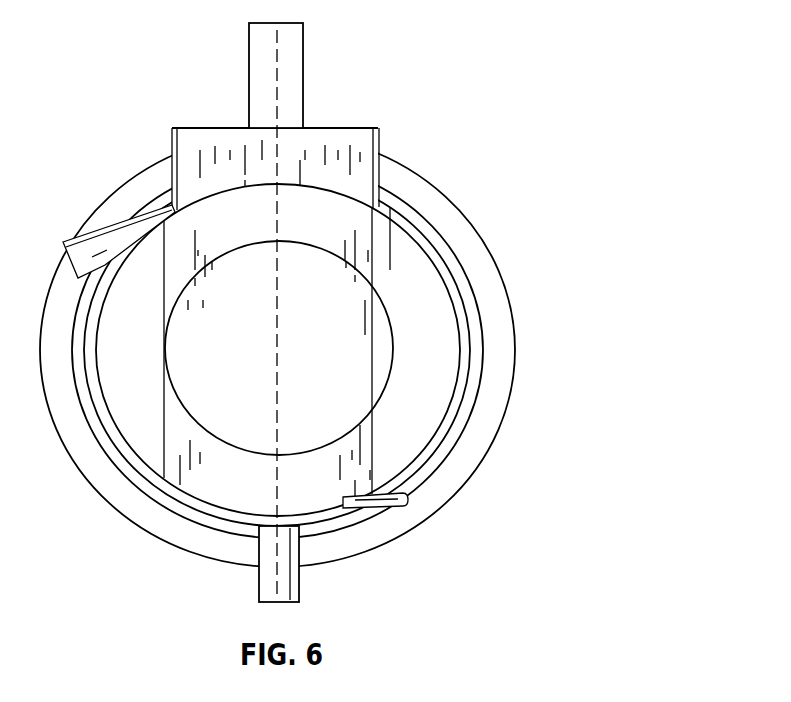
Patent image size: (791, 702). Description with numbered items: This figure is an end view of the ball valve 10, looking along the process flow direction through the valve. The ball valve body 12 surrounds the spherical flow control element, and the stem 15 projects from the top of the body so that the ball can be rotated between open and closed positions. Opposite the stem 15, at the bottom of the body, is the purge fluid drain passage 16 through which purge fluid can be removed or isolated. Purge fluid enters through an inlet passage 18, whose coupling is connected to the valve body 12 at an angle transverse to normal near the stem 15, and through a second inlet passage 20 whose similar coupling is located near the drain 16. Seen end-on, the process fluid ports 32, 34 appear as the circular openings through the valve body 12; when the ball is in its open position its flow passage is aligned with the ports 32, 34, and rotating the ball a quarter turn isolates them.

The ball valve 10 is at (466, 41).
The ball valve body 12 is at (517, 333).
The stem 15 is at (248, 78).
The purge fluid drain passage 16 is at (300, 575).
The inlet passage 18 is at (93, 243).
The inlet passage 20 is at (410, 502).
The process fluid port 32 is at (440, 270).
The process fluid port 34 is at (122, 512).